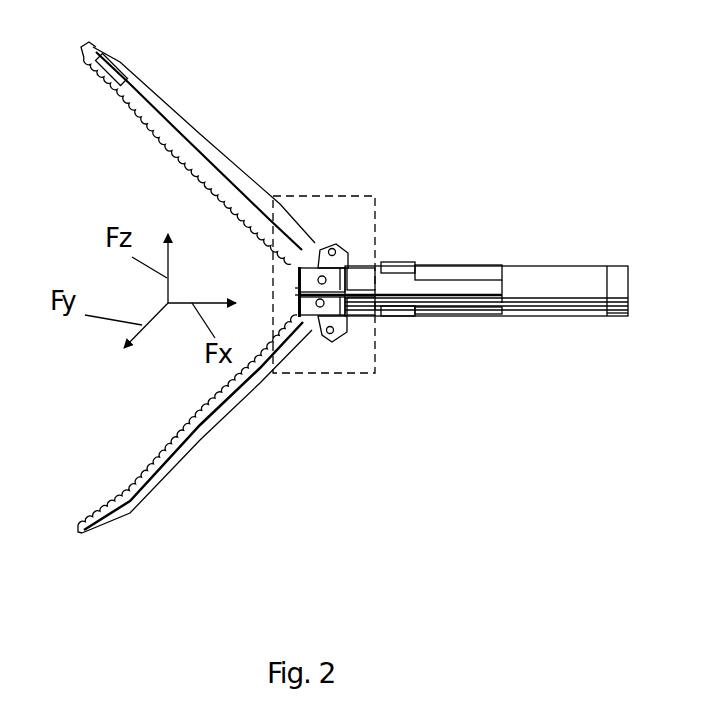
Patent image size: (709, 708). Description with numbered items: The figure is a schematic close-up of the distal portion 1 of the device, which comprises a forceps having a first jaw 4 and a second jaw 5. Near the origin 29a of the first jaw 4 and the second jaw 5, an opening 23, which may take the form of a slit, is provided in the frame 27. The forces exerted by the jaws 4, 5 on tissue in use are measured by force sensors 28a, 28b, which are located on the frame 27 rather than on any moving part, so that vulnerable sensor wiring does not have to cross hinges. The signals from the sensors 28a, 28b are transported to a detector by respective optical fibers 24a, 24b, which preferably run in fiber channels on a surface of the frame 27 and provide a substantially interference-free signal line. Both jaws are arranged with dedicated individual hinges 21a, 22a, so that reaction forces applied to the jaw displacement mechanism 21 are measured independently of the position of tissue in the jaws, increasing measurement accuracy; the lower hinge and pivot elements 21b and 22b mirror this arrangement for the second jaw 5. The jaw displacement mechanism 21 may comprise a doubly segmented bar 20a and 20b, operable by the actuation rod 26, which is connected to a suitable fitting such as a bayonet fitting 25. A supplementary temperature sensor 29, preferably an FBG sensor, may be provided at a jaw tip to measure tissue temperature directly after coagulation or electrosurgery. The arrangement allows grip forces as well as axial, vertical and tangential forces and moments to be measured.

The distal portion 1 is at (332, 32).
The first jaw 4 is at (121, 101).
The second jaw 5 is at (133, 467).
The temperature sensor 29 is at (117, 67).
The origin of the jaws 29a is at (297, 286).
The first segment of doubly segmented bar 20a is at (347, 258).
The second segment of doubly segmented bar 20b is at (347, 323).
The jaw displacement mechanism 21 is at (362, 252).
The hinge 21a is at (319, 277).
The second jaw pivot 21b is at (320, 306).
The hinge 22a is at (331, 249).
The second sensor pin 22b is at (332, 334).
The opening 23 is at (356, 286).
The optical fiber 24a is at (461, 267).
The optical fiber 24b is at (465, 322).
The bayonet fitting 25 is at (603, 276).
The actuation rod 26 is at (623, 293).
The frame 27 is at (367, 312).
The force sensor 28a is at (407, 263).
The force sensor 28b is at (403, 317).